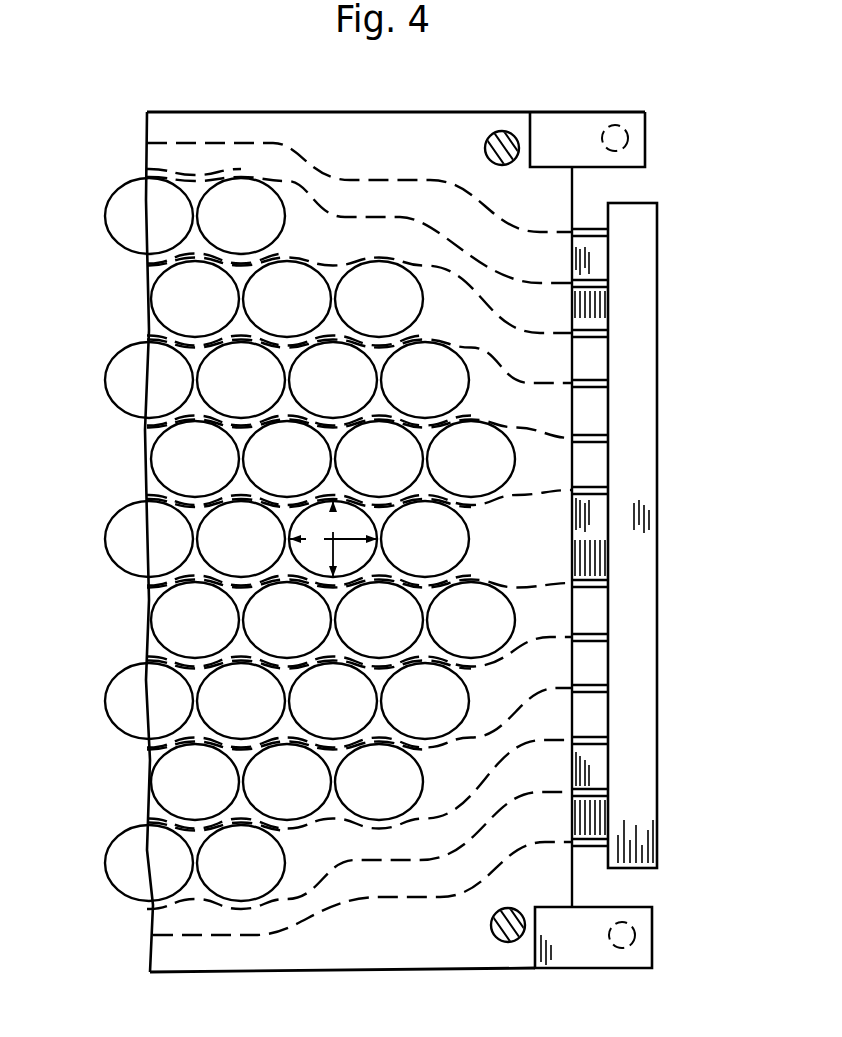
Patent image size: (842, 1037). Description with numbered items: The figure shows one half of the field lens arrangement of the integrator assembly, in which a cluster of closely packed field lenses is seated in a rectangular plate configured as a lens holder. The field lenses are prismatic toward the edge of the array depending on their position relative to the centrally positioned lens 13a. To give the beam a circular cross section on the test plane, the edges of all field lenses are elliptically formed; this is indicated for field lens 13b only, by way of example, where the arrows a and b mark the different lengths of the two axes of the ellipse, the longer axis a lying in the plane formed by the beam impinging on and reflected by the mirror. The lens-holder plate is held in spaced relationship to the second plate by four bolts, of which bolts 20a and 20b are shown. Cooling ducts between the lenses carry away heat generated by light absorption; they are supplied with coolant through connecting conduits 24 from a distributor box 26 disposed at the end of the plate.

The centrally positioned lens 13a is at (155, 550).
The field lens 13b is at (300, 552).
The longer axis a is at (333, 539).
The shorter axis b is at (334, 539).
The bolt 20a is at (508, 942).
The bolt 20b is at (497, 135).
The connecting conduit 24 is at (598, 825).
The distributor box 26 is at (627, 415).